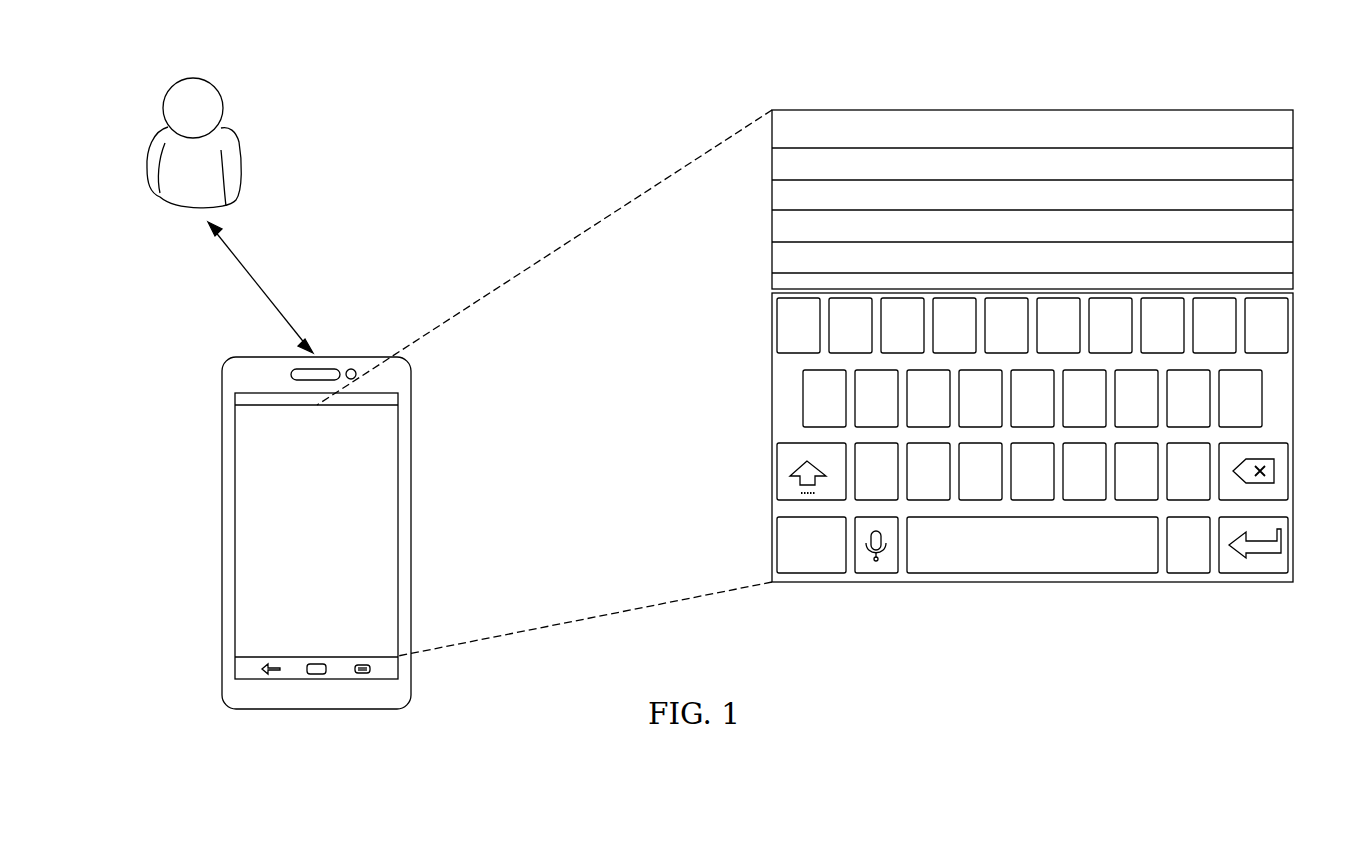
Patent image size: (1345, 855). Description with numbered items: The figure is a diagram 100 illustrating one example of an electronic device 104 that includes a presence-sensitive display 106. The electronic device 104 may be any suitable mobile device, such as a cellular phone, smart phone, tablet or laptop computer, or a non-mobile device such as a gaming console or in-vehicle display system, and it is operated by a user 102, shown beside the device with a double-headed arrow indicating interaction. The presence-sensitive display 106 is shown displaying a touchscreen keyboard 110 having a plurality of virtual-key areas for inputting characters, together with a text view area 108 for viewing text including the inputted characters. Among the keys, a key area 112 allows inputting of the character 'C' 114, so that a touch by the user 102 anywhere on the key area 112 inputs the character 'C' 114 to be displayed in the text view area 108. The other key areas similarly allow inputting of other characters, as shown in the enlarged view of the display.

The diagram 100 is at (1248, 43).
The user 102 is at (240, 158).
The electronic device 104 is at (314, 533).
The presence-sensitive display 106 is at (377, 532).
The text view area 108 is at (1293, 200).
The touchscreen keyboard 110 is at (1293, 437).
The key area 112 is at (961, 500).
The character 'C' 114 is at (980, 485).